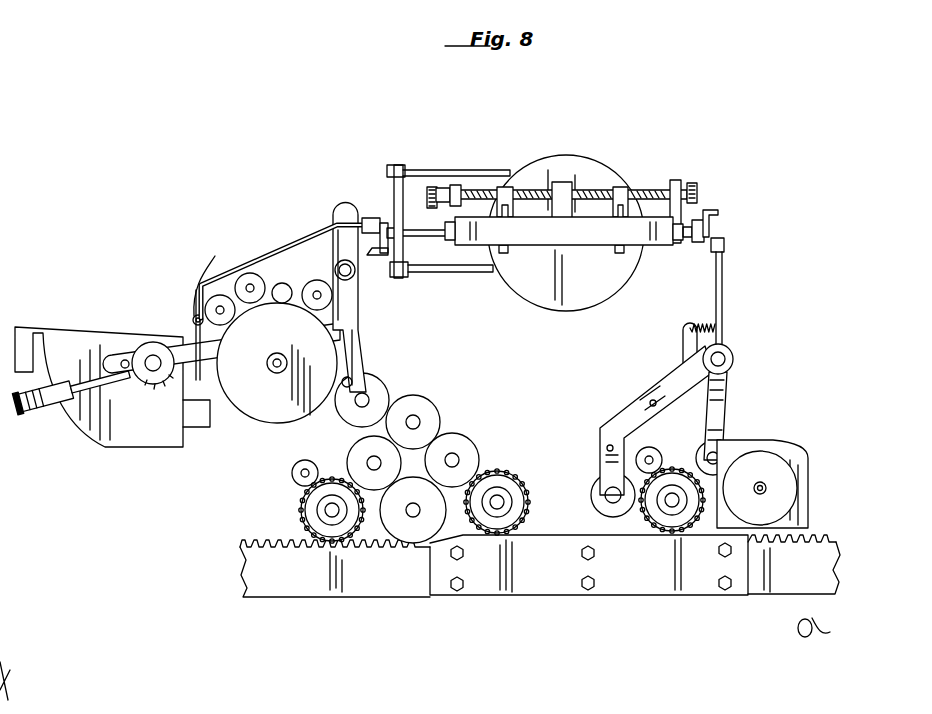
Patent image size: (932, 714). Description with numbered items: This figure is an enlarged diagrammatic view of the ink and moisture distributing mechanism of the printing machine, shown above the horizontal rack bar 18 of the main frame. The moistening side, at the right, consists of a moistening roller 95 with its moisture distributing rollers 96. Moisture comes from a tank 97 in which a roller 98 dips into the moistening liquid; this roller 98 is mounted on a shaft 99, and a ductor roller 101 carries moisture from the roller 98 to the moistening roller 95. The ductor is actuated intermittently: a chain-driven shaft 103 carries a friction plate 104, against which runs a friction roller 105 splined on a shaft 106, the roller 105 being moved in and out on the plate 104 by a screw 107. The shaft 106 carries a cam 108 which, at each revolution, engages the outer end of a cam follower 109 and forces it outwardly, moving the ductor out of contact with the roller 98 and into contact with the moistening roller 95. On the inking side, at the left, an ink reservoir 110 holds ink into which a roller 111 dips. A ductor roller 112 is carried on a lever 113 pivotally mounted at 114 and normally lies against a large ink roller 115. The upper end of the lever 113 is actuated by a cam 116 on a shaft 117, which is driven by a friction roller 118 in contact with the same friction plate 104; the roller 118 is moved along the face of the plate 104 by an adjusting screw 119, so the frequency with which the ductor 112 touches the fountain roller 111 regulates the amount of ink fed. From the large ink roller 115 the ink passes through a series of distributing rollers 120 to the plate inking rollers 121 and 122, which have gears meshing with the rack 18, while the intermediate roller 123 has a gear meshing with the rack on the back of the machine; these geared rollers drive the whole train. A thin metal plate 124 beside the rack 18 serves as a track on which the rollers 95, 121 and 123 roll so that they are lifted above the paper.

The rack bar 18 is at (262, 545).
The moistening roller 95 is at (664, 468).
The moisture distributing rollers 96 is at (645, 460).
The tank 97 is at (800, 511).
The roller 98 is at (785, 490).
The shaft 99 is at (766, 487).
The ductor roller 101 is at (723, 446).
The shaft 103 is at (566, 232).
The friction plate 104 is at (568, 298).
The friction roller 105 is at (622, 254).
The shaft 106 is at (708, 232).
The screw 107 is at (647, 193).
The cam 108 is at (710, 214).
The cam follower 109 is at (724, 271).
The ink reservoir 110 is at (126, 438).
The roller 111 is at (160, 323).
The ductor roller 112 is at (193, 328).
The lever 113 is at (263, 240).
The pivot 114 is at (218, 254).
The large ink roller 115 is at (262, 418).
The cam 116 is at (376, 258).
The shaft 117 is at (423, 273).
The friction roller 118 is at (506, 254).
The adjusting screw 119 is at (481, 194).
The distributing rollers 120 is at (455, 440).
The plate inking roller 121 is at (503, 476).
The plate inking roller 122 is at (303, 496).
The intermediate roller 123 is at (403, 522).
The metal plate 124 is at (618, 592).